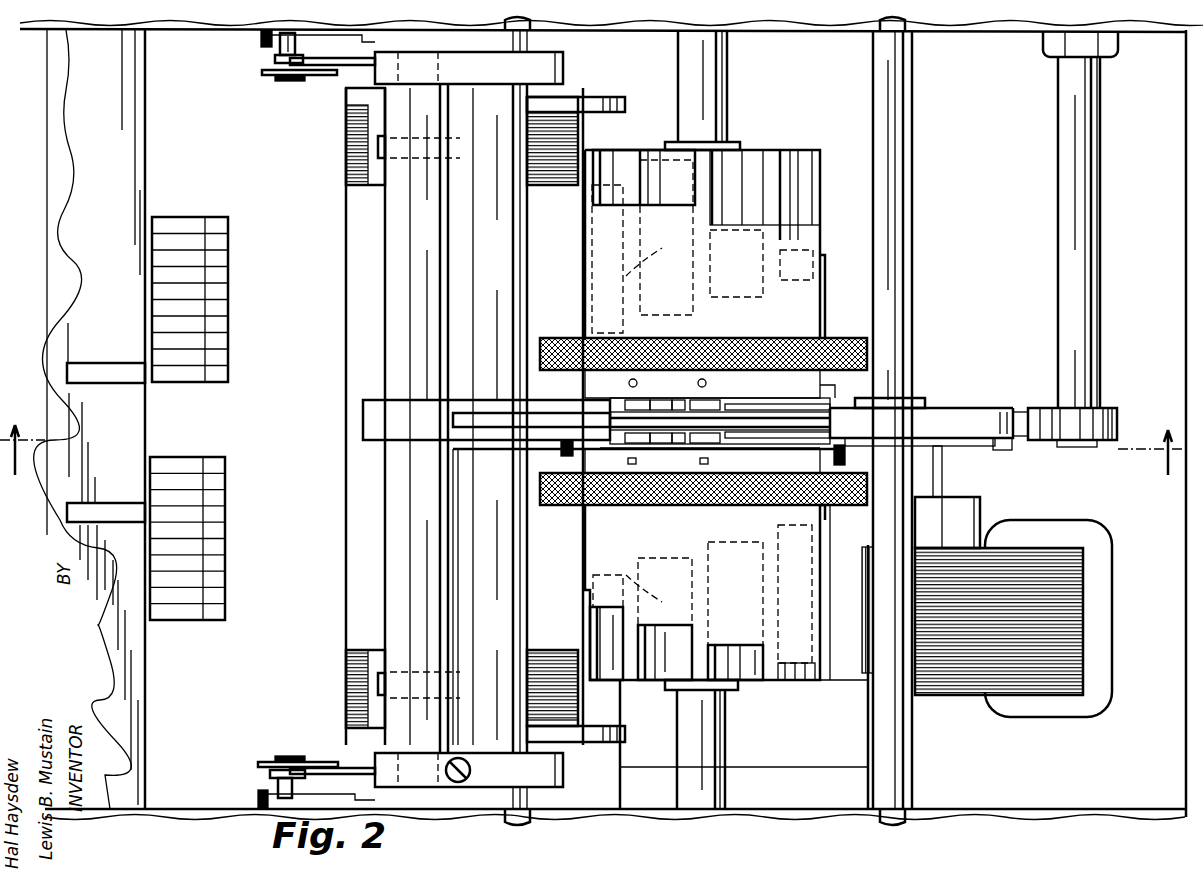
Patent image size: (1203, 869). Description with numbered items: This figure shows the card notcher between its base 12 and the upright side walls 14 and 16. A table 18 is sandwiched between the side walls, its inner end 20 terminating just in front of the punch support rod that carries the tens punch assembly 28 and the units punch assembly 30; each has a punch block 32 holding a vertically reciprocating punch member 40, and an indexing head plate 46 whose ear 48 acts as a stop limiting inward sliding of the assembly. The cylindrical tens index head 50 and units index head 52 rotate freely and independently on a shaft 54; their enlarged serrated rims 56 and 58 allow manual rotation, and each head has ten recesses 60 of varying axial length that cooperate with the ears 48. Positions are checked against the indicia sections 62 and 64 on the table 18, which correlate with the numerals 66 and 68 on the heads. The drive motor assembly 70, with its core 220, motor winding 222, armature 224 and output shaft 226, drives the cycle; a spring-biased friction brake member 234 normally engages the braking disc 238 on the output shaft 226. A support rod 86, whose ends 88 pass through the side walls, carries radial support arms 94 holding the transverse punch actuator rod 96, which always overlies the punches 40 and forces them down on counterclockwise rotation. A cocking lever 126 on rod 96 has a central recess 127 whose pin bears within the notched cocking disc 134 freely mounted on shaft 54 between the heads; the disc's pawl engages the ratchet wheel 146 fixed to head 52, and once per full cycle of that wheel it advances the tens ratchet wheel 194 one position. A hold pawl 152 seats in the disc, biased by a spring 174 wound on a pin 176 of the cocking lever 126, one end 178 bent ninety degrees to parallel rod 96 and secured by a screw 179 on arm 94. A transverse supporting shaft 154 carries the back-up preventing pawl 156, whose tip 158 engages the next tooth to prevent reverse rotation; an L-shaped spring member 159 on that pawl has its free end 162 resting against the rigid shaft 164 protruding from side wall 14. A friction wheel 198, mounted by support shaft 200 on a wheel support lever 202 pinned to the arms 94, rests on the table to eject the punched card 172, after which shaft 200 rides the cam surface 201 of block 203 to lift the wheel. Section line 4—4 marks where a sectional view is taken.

The base 12 is at (1134, 423).
The side wall 14 is at (210, 28).
The side wall 16 is at (930, 808).
The table 18 is at (155, 419).
The inner end of table 20 is at (352, 455).
The tens punch assembly 28 is at (557, 197).
The units punch assembly 30 is at (560, 642).
The punch block 32 is at (362, 175).
The punch member 40 is at (376, 147).
The indexing head plate 46 is at (560, 97).
The indexing ear 48 is at (626, 105).
The tens index head 50 is at (829, 302).
The units index head 52 is at (797, 694).
The shaft 54 is at (718, 88).
The serrated rim 56 is at (858, 345).
The serrated rim 58 is at (852, 506).
The recesses 60 is at (670, 205).
The tens indicia section 62 is at (228, 360).
The units indicia section 64 is at (225, 578).
The numerals 66 is at (697, 386).
The numerals 68 is at (698, 462).
The drive motor assembly 70 is at (806, 809).
The support rod 86 is at (522, 575).
The ends of support rod 88 is at (532, 24).
The radial support arms 94 is at (469, 419).
The punch actuator rod 96 is at (400, 312).
The cocking lever 126 is at (366, 429).
The central recess 127 is at (452, 416).
The cocking disc 134 is at (832, 425).
The ratchet wheel 146 is at (710, 442).
The hold pawl 152 is at (497, 395).
The transverse supporting shaft 154 is at (908, 244).
The back-up preventing pawl 156 is at (921, 394).
The pawl tip 158 is at (730, 406).
The L-shaped spring member 159 is at (988, 405).
The free end of spring member 162 is at (1120, 418).
The rigid shaft 164 is at (1090, 342).
The card 172 is at (147, 410).
The biasing spring 174 is at (496, 459).
The pin 176 is at (580, 460).
The spring end 178 is at (458, 535).
The screw 179 is at (470, 752).
The tens indexing head ratchet wheel 194 is at (710, 406).
The friction wheel 198 is at (262, 74).
The support shaft 200 is at (278, 49).
The cam surface 201 is at (366, 40).
The wheel support lever 202 is at (332, 68).
The block 203 is at (260, 38).
The core 220 is at (1036, 695).
The motor winding 222 is at (1113, 630).
The armature 224 is at (975, 510).
The output shaft 226 is at (944, 480).
The friction brake member 234 is at (885, 455).
The braking disc 238 is at (998, 452).
The section line 4 is at (592, 460).